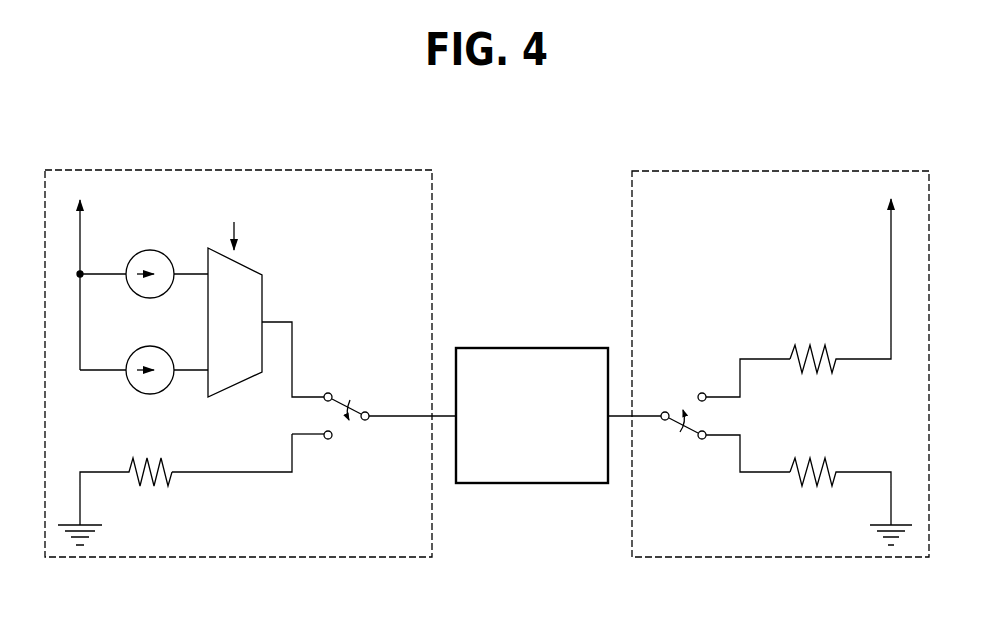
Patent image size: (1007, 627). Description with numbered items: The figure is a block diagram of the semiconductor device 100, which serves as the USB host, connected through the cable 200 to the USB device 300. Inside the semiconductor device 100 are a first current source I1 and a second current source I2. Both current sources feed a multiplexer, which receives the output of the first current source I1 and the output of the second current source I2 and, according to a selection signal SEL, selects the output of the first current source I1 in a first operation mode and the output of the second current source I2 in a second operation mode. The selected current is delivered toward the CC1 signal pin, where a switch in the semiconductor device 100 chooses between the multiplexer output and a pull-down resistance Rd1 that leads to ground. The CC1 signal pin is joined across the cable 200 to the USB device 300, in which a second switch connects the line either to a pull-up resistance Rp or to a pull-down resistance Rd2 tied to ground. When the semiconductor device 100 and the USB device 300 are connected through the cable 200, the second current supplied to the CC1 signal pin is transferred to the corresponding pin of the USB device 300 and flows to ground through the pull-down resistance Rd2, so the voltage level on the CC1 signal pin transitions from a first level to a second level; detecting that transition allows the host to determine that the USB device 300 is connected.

The semiconductor device 100 is at (238, 170).
The cable 200 is at (530, 348).
The USB device 300 is at (780, 171).
The first current source I1 is at (144, 258).
The second current source I2 is at (144, 355).
The selection signal SEL is at (266, 312).
The CC1 signal pin CC1 is at (390, 412).
The pull-down resistance Rd1 is at (175, 485).
The pull-up resistance Rp is at (798, 298).
The pull-down resistance Rd2 is at (809, 486).